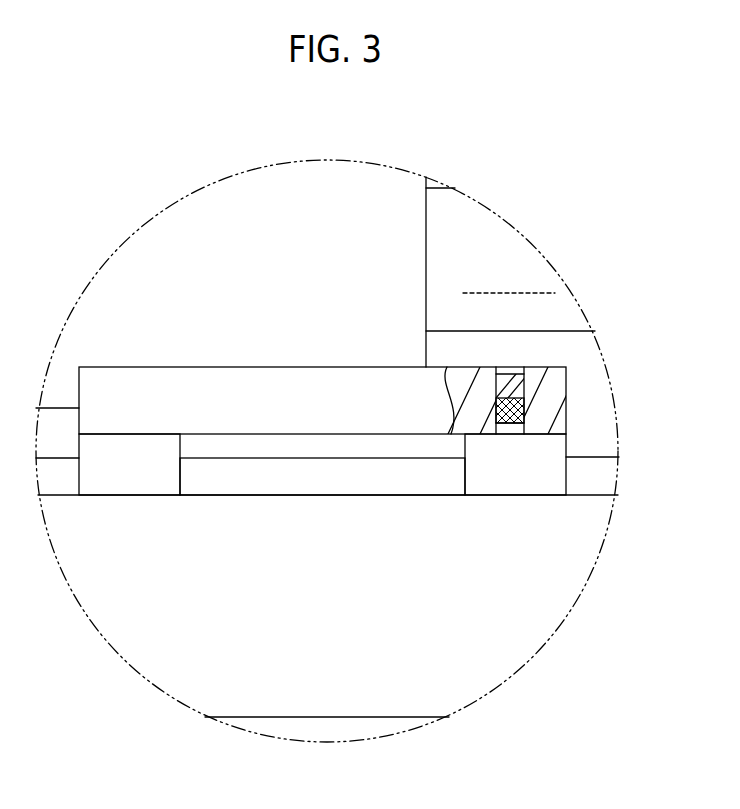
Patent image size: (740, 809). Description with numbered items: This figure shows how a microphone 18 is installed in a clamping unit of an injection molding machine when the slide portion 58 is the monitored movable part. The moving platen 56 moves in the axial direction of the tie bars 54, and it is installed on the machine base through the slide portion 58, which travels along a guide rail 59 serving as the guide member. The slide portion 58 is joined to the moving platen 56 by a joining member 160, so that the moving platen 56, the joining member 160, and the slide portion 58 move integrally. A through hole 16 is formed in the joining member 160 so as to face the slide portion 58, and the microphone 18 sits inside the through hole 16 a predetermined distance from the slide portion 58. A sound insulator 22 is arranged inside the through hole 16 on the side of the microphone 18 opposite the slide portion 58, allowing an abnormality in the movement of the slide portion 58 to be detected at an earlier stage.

The moving platen 56 is at (368, 195).
The tie bars 54 is at (503, 245).
The sound insulator 22 is at (507, 385).
The joining member 160 is at (553, 381).
The microphone 18 is at (493, 410).
The through hole 16 is at (518, 425).
The slide portion 58 is at (137, 477).
The guide rail 59 is at (329, 478).